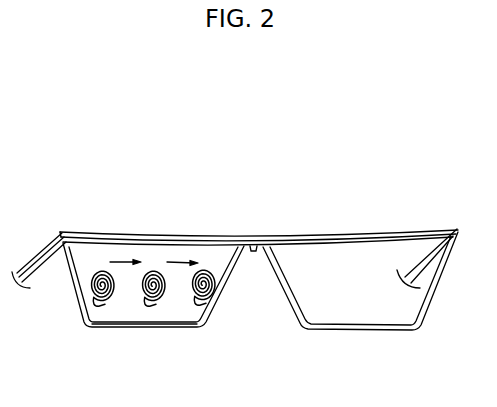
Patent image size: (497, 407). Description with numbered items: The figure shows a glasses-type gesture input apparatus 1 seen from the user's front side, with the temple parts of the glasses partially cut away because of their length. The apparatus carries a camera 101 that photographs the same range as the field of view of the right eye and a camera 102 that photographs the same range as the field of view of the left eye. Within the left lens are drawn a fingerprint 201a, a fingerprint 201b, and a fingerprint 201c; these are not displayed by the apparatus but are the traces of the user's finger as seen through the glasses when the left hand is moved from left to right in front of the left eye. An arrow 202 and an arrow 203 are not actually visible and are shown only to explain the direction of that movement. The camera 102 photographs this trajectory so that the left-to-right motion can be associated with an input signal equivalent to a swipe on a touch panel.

The gesture input apparatus 1 is at (257, 243).
The camera 101 is at (368, 238).
The camera 102 is at (155, 235).
The fingerprint 201a is at (107, 308).
The fingerprint 201b is at (155, 308).
The fingerprint 201c is at (200, 308).
The arrow 202 is at (120, 260).
The arrow 203 is at (182, 262).